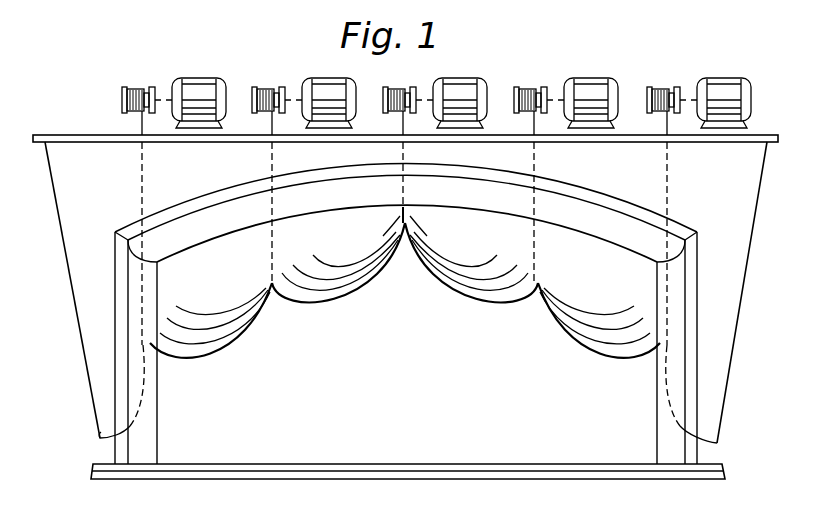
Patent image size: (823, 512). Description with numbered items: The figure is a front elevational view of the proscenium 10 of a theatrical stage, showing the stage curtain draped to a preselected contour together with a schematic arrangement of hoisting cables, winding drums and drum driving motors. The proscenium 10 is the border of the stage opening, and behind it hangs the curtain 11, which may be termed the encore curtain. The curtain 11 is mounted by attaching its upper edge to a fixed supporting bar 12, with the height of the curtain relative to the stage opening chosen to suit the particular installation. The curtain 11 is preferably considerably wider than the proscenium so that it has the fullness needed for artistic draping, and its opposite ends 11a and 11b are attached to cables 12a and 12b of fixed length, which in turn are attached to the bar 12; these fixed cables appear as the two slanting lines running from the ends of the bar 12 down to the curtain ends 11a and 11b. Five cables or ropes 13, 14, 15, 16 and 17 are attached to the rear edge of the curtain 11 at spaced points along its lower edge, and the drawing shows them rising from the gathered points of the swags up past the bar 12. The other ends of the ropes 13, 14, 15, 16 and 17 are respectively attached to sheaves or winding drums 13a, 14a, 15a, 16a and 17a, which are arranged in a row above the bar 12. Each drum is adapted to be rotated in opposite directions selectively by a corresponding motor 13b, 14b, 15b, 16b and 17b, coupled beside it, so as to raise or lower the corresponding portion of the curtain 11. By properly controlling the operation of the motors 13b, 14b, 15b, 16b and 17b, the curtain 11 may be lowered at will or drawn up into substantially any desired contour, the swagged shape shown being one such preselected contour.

The proscenium 10 is at (160, 424).
The curtain 11 is at (361, 300).
The curtain end 11a is at (96, 438).
The curtain end 11b is at (722, 443).
The supporting bar 12 is at (80, 133).
The cable of fixed length 12a is at (70, 297).
The cable of fixed length 12b is at (739, 306).
The cable 13 is at (146, 179).
The cable 14 is at (276, 159).
The cable 15 is at (407, 159).
The cable 16 is at (538, 159).
The cable 17 is at (671, 182).
The winding drum 13a is at (141, 86).
The winding drum 14a is at (271, 86).
The winding drum 15a is at (398, 85).
The winding drum 16a is at (532, 86).
The winding drum 17a is at (665, 86).
The motor 13b is at (194, 79).
The motor 14b is at (321, 79).
The motor 15b is at (460, 82).
The motor 16b is at (589, 79).
The motor 17b is at (720, 79).